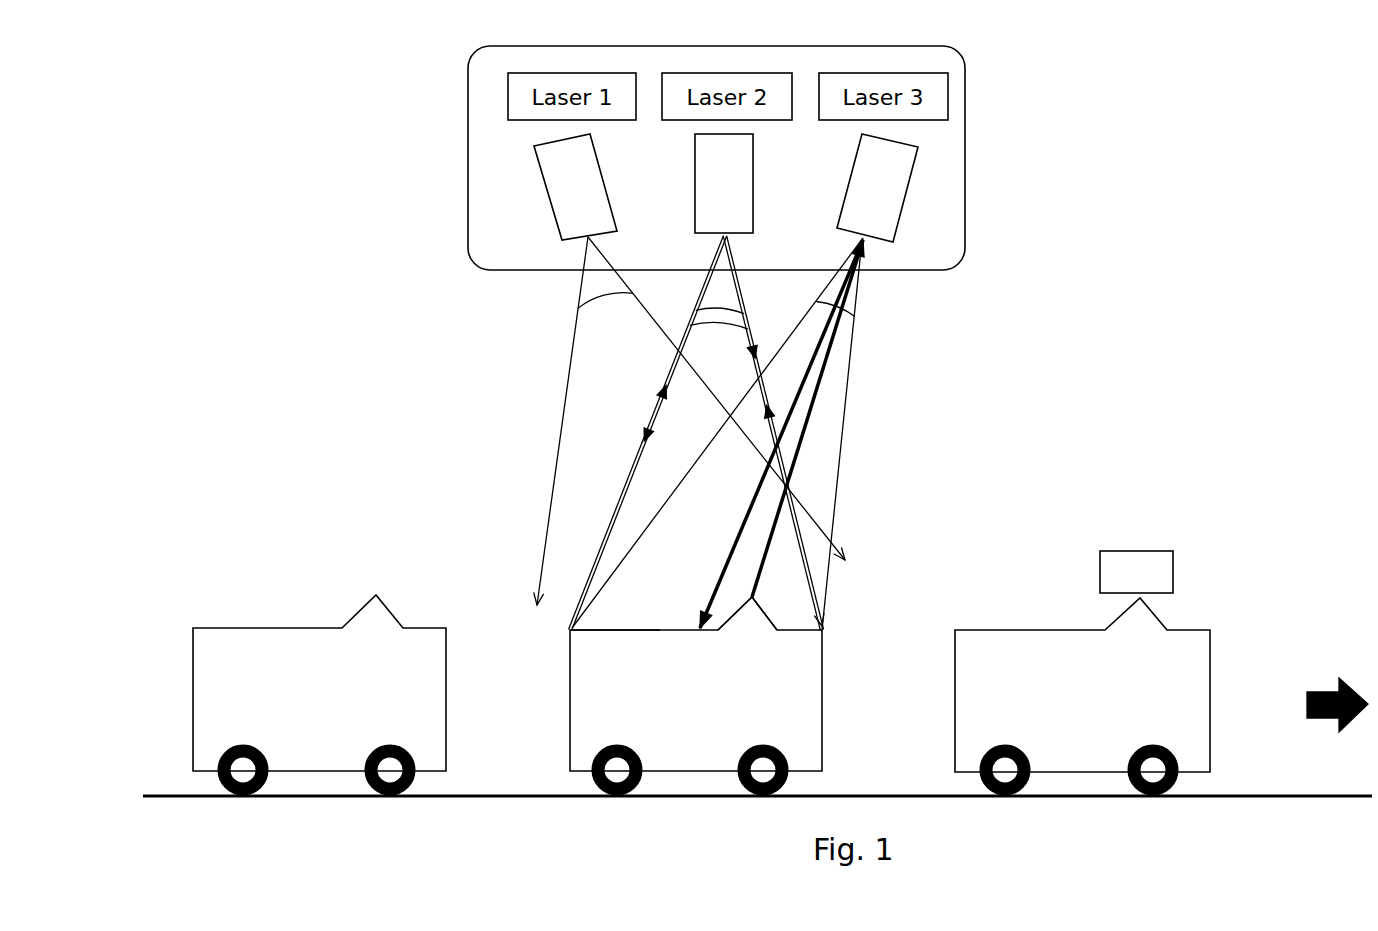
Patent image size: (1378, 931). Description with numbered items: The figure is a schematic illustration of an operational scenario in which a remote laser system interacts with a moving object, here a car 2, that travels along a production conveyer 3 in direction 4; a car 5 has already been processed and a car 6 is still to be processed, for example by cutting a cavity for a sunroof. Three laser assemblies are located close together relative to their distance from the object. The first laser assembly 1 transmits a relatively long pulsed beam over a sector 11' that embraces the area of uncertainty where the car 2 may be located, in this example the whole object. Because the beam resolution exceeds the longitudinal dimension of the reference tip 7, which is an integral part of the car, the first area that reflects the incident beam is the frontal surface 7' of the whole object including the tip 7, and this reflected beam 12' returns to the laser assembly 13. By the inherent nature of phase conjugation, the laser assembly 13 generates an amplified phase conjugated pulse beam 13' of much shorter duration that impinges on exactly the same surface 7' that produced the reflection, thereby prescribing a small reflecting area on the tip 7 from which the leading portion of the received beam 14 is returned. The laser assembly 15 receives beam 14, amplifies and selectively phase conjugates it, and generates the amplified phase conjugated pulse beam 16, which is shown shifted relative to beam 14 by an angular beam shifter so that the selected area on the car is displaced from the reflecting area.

The first laser assembly 1 is at (585, 182).
The laser assembly 13 is at (751, 183).
The laser assembly 15 is at (882, 208).
The sector 11' is at (561, 421).
The reflected beam 12' is at (658, 432).
The amplified phase conjugated pulse beam 13' is at (649, 434).
The received laser beam 14 is at (772, 528).
The amplified phase conjugated pulse beam 16 is at (730, 555).
The car 2 is at (582, 700).
The reference tip 7 is at (799, 611).
The frontal surface 7' is at (569, 599).
The car 6 is at (225, 688).
The car 5 is at (987, 708).
The production conveyer 3 is at (528, 797).
The direction 4 is at (1325, 690).